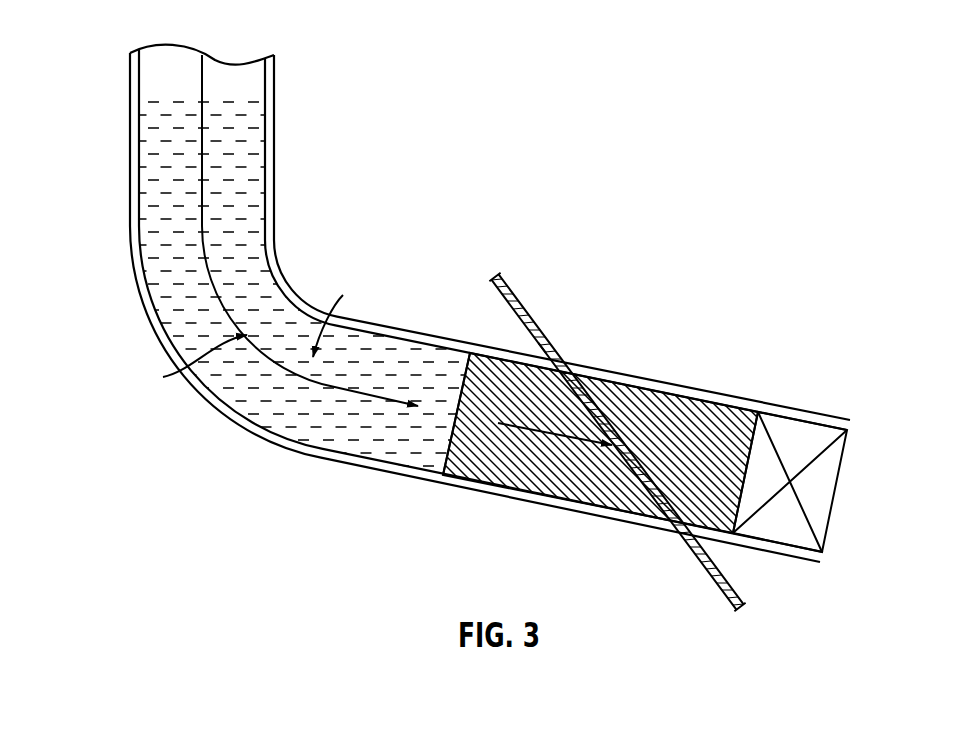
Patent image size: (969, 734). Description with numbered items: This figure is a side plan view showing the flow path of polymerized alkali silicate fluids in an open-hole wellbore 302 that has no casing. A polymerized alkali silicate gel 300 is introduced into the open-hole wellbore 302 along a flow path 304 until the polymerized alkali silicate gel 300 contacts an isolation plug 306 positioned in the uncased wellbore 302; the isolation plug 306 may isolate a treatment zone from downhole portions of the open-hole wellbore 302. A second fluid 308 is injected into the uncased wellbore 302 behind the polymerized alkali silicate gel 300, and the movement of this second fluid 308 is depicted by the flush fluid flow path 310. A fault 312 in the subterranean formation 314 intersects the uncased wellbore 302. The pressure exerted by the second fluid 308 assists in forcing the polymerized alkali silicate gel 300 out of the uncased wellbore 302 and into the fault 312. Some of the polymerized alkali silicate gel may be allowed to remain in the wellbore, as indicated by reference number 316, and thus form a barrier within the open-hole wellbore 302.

The polymerized alkali silicate gel 300 is at (712, 412).
The open-hole wellbore 302 is at (128, 197).
The flow path 304 is at (545, 437).
The isolation plug 306 is at (820, 482).
The second fluid 308 is at (339, 310).
The flush fluid flow path 310 is at (267, 230).
The fault 312 is at (530, 312).
The subterranean formation 314 is at (491, 327).
The polymerized alkali silicate gel remaining in the wellbore 316 is at (552, 347).